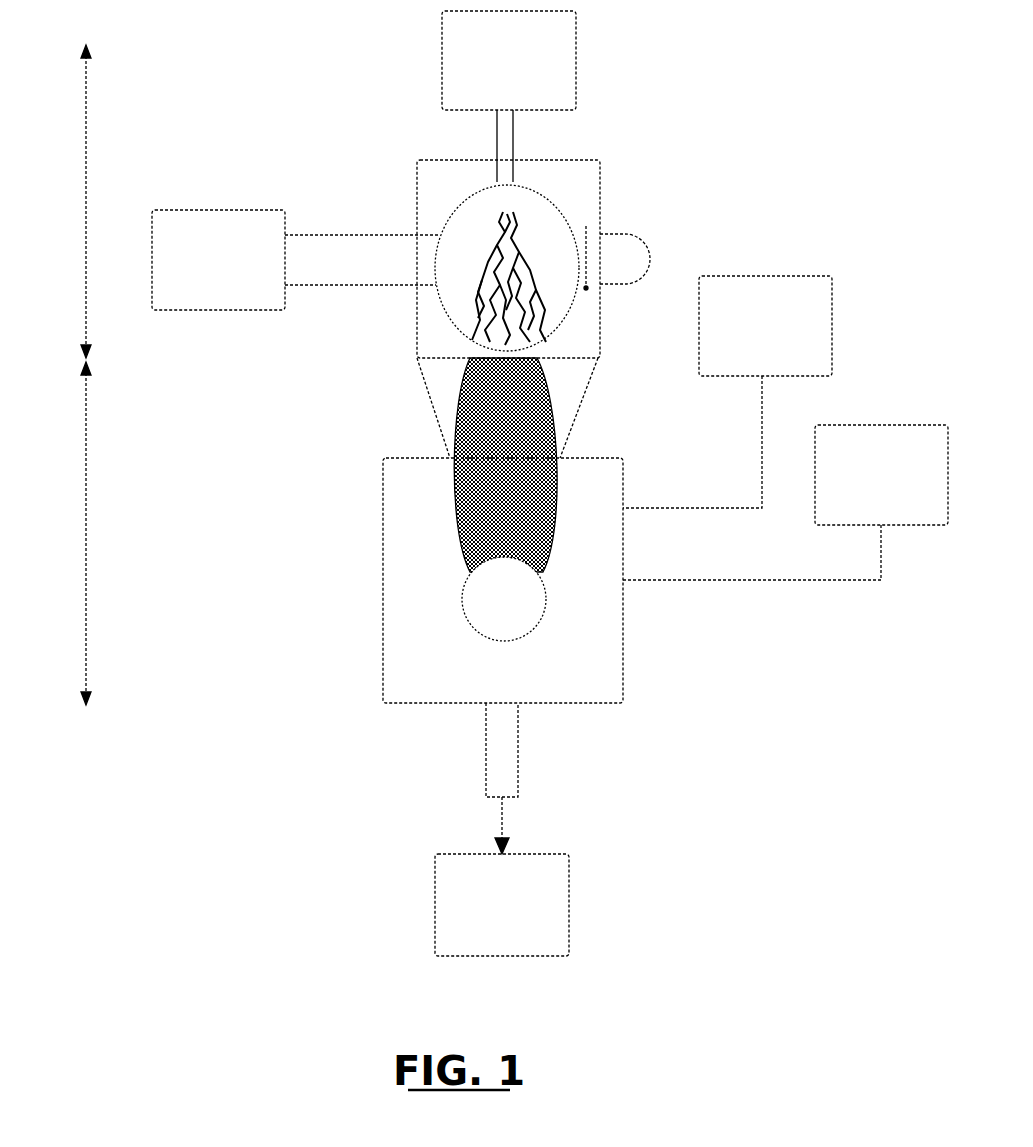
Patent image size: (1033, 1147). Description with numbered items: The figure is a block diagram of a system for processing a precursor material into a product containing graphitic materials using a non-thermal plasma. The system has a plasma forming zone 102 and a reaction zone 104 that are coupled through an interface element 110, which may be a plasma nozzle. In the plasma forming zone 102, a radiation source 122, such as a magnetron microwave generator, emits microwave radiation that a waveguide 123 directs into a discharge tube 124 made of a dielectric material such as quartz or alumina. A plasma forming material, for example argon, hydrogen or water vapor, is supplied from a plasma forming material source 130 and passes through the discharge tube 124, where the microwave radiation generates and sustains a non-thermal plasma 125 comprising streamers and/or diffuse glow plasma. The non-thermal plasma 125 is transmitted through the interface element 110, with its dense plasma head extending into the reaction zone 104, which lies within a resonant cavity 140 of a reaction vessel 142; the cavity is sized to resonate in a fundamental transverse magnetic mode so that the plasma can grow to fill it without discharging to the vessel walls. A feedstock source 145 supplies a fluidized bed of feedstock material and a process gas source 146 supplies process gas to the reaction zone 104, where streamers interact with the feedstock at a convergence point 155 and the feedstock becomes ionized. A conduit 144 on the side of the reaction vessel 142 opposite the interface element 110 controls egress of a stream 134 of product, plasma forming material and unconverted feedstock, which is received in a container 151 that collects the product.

The plasma forming zone 102 is at (58, 201).
The reaction zone 104 is at (58, 533).
The interface element 110 is at (433, 410).
The radiation source 122 is at (218, 260).
The waveguide 123 is at (362, 260).
The discharge tube 124 is at (592, 203).
The non-thermal plasma 125 is at (548, 210).
The plasma forming material source 130 is at (509, 96).
The stream 134 is at (507, 832).
The resonant cavity 140 is at (600, 673).
The reaction vessel 142 is at (417, 502).
The conduit 144 is at (486, 746).
The feedstock source 145 is at (727, 392).
The process gas source 146 is at (785, 502).
The container 151 is at (502, 905).
The convergence point 155 is at (504, 599).